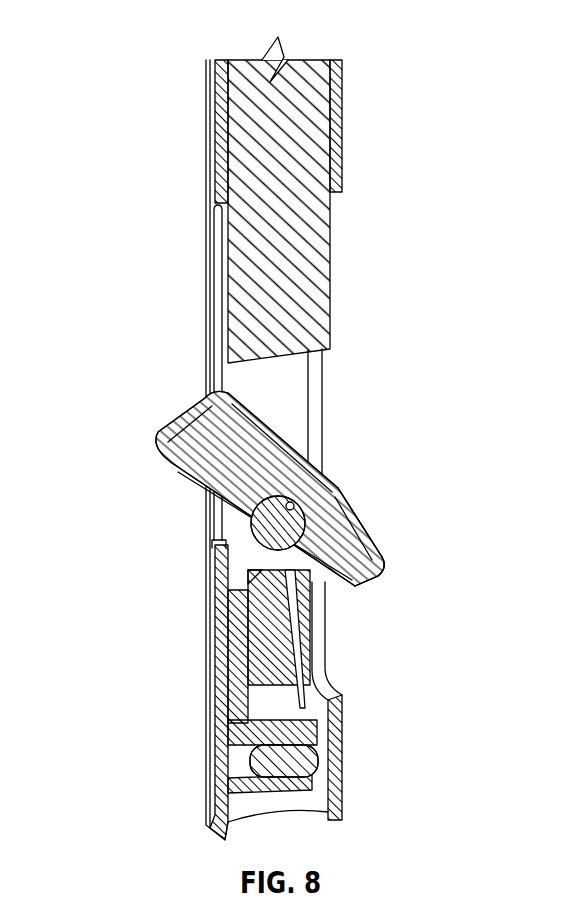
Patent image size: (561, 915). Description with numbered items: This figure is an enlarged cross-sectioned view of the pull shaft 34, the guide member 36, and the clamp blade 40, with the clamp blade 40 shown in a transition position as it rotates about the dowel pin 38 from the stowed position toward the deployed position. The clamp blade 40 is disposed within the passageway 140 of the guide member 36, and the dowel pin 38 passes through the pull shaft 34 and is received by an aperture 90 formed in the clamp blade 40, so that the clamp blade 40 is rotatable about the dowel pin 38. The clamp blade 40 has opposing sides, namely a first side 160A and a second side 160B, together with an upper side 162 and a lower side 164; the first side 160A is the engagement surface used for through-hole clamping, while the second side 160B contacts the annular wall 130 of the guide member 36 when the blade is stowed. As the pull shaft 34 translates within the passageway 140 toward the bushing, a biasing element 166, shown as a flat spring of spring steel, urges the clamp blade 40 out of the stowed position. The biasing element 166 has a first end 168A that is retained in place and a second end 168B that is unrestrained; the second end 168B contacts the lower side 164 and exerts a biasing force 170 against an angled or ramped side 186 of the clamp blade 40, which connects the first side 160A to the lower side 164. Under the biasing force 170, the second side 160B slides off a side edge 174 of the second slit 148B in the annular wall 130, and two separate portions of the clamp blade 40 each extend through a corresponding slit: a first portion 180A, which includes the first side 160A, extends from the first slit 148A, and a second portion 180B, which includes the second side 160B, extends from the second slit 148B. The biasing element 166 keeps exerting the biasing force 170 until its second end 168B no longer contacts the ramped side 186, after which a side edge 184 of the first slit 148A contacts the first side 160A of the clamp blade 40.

The pull shaft 34 is at (297, 82).
The guide member 36 is at (336, 125).
The annular wall 130 is at (222, 153).
The passageway 140 is at (307, 237).
The first slit 148A is at (222, 383).
The second slit 148B is at (322, 370).
The clamp blade 40 is at (265, 489).
The upper side 162 is at (180, 432).
The first portion 180A is at (197, 447).
The first side 160A is at (175, 482).
The second side 160B is at (297, 453).
The second portion 180B is at (370, 552).
The lower side 164 is at (376, 570).
The aperture 90 is at (293, 509).
The dowel pin 38 is at (286, 530).
The side edge of first slit 184 is at (211, 540).
The ramped side 186 is at (250, 578).
The second end 168B is at (323, 587).
The biasing force 170 is at (247, 640).
The biasing element 166 is at (303, 618).
The side edge of second slit 174 is at (332, 693).
The first end 168A is at (342, 725).